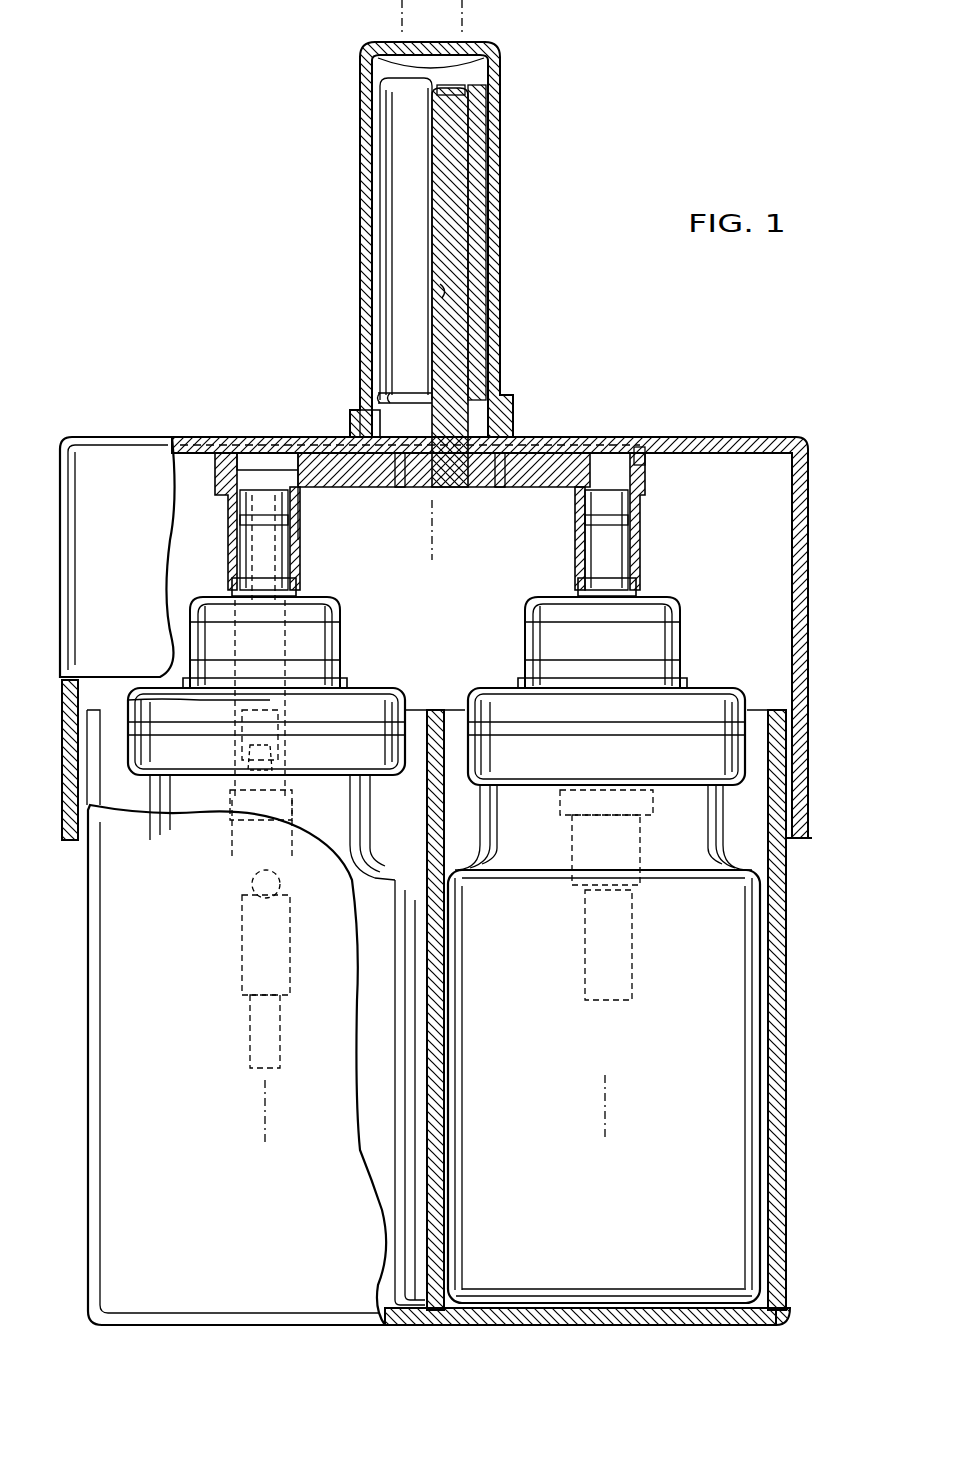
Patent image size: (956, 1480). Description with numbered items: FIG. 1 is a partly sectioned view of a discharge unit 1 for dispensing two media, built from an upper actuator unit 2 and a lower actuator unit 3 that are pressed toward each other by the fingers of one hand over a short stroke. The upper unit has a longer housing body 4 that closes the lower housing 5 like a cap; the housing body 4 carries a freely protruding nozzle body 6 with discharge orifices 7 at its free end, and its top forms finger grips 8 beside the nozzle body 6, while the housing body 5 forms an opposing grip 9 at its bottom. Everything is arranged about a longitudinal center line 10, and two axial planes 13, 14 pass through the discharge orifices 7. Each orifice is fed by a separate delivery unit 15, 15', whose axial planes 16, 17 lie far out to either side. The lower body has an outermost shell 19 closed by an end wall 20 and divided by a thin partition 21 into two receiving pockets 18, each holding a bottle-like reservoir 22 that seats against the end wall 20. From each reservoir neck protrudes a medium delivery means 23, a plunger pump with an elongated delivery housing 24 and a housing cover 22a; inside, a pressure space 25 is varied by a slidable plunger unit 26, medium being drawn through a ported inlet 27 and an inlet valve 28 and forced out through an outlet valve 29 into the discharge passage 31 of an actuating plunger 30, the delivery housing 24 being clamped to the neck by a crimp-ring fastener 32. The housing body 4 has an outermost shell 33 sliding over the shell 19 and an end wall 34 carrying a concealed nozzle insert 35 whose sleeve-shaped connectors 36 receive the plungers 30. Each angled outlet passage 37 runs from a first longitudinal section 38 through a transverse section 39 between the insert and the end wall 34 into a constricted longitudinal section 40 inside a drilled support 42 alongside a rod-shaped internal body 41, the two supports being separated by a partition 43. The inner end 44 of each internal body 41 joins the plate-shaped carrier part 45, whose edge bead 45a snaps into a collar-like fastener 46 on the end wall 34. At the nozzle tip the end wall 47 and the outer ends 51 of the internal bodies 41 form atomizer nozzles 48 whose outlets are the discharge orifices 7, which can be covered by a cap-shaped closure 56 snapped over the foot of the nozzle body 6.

The discharge unit 1 is at (175, 166).
The actuator unit 2 is at (38, 585).
The actuator unit 3 is at (42, 918).
The housing body 4 is at (55, 432).
The lower housing 5 is at (90, 1328).
The nozzle body 6 is at (384, 274).
The discharge orifice 7 is at (480, 72).
The finger grips 8 is at (136, 440).
The opposing grip 9 is at (395, 1330).
The longitudinal center line 10 is at (426, 556).
The axial plane 13 is at (462, 28).
The axial plane 14 is at (402, 28).
The delivery unit 15 is at (435, 680).
The delivery unit 15' is at (762, 961).
The axial plane 16 is at (595, 1130).
The axial plane 17 is at (262, 1140).
The receiving pocket 18 is at (405, 848).
The outermost shell 19 is at (780, 1015).
The end wall 20 is at (548, 1310).
The partition 21 is at (446, 1095).
The media reservoir 22 is at (720, 1195).
The housing cover 22a is at (330, 645).
The medium delivery means 23 is at (240, 900).
The delivery housing 24 is at (290, 900).
The pressure space 25 is at (232, 786).
The plunger unit 26 is at (240, 732).
The ported inlet 27 is at (265, 1070).
The inlet valve 28 is at (250, 884).
The outlet valve 29 is at (262, 738).
The actuating plunger 30 is at (248, 548).
The discharge passage 31 is at (265, 553).
The fastener 32 is at (140, 690).
The outermost shell 33 is at (812, 618).
The end wall 34 is at (750, 455).
The nozzle insert 35 is at (514, 515).
The sleeve-shaped connector 36 is at (298, 520).
The outlet passage 37 is at (275, 462).
The first longitudinal section 38 is at (242, 490).
The transverse section 39 is at (366, 478).
The longitudinal section 40 is at (380, 432).
The internal body 41 is at (442, 330).
The support 42 is at (442, 290).
The partition 43 is at (432, 250).
The inner end 44 is at (412, 472).
The carrier part 45 is at (490, 472).
The bead 45a is at (638, 452).
The fastener 46 is at (640, 490).
The end wall 47 is at (375, 84).
The atomizer nozzle 48 is at (478, 78).
The outer end 51 is at (440, 100).
The cap-shaped closure 56 is at (358, 128).